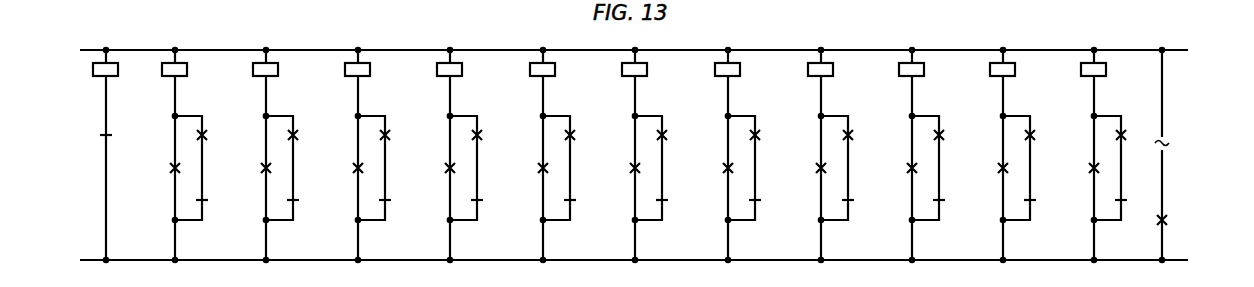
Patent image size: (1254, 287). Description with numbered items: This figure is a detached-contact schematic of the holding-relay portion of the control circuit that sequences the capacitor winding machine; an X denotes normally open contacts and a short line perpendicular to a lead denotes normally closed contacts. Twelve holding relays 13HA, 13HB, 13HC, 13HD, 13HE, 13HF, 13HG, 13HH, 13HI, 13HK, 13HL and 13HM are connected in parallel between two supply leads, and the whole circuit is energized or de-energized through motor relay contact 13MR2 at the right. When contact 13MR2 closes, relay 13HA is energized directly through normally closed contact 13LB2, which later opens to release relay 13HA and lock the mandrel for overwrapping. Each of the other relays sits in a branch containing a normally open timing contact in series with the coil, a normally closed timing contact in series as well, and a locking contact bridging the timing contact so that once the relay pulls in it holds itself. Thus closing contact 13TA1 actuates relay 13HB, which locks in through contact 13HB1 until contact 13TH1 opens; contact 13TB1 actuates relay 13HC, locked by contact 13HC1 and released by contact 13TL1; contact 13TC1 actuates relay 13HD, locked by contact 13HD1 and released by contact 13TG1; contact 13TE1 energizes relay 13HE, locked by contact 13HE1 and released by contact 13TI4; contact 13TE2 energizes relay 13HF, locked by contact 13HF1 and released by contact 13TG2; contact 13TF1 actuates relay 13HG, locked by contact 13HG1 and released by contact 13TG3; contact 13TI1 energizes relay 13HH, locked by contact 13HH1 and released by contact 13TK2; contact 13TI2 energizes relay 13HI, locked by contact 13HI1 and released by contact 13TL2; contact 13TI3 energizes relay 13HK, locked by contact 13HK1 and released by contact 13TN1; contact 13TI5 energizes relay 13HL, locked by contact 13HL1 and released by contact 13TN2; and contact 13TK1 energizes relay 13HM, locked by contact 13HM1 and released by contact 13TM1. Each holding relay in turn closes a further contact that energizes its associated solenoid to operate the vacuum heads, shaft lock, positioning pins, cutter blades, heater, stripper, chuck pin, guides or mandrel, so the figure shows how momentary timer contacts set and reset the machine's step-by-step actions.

The holding relay 13HA is at (113, 76).
The contact 13LB2 is at (101, 136).
The holding relay 13HB is at (182, 76).
The contact 13HB1 is at (228, 114).
The contact 13TA1 is at (169, 168).
The contact 13TH1 is at (204, 201).
The holding relay 13HC is at (273, 76).
The contact 13HC1 is at (319, 114).
The contact 13TB1 is at (260, 168).
The contact 13TL1 is at (295, 201).
The holding relay 13HD is at (365, 76).
The contact 13HD1 is at (411, 114).
The contact 13TC1 is at (352, 168).
The contact 13TG1 is at (387, 201).
The holding relay 13HE is at (457, 76).
The contact 13HE1 is at (503, 114).
The contact 13TE1 is at (444, 168).
The contact 13TI4 is at (479, 201).
The holding relay 13HF is at (550, 76).
The contact 13HF1 is at (596, 114).
The contact 13TE2 is at (537, 168).
The contact 13TG2 is at (572, 201).
The holding relay 13HG is at (642, 76).
The contact 13HG1 is at (688, 114).
The contact 13TF1 is at (629, 168).
The contact 13TG3 is at (664, 201).
The holding relay 13HH is at (735, 76).
The contact 13HH1 is at (781, 114).
The contact 13TI1 is at (722, 168).
The contact 13TK2 is at (757, 201).
The holding relay 13HI is at (828, 76).
The contact 13HI1 is at (874, 114).
The contact 13TI2 is at (815, 168).
The contact 13TL2 is at (850, 201).
The holding relay 13HK is at (919, 76).
The contact 13HK1 is at (965, 114).
The contact 13TI3 is at (906, 168).
The contact 13TN1 is at (941, 201).
The holding relay 13HL is at (1010, 76).
The contact 13HL1 is at (1056, 114).
The contact 13TI5 is at (997, 168).
The contact 13TN2 is at (1032, 201).
The holding relay 13HM is at (1101, 76).
The contact 13HM1 is at (1127, 137).
The contact 13TK1 is at (1088, 168).
The contact 13TM1 is at (1123, 201).
The contact 13MR2 is at (1167, 218).